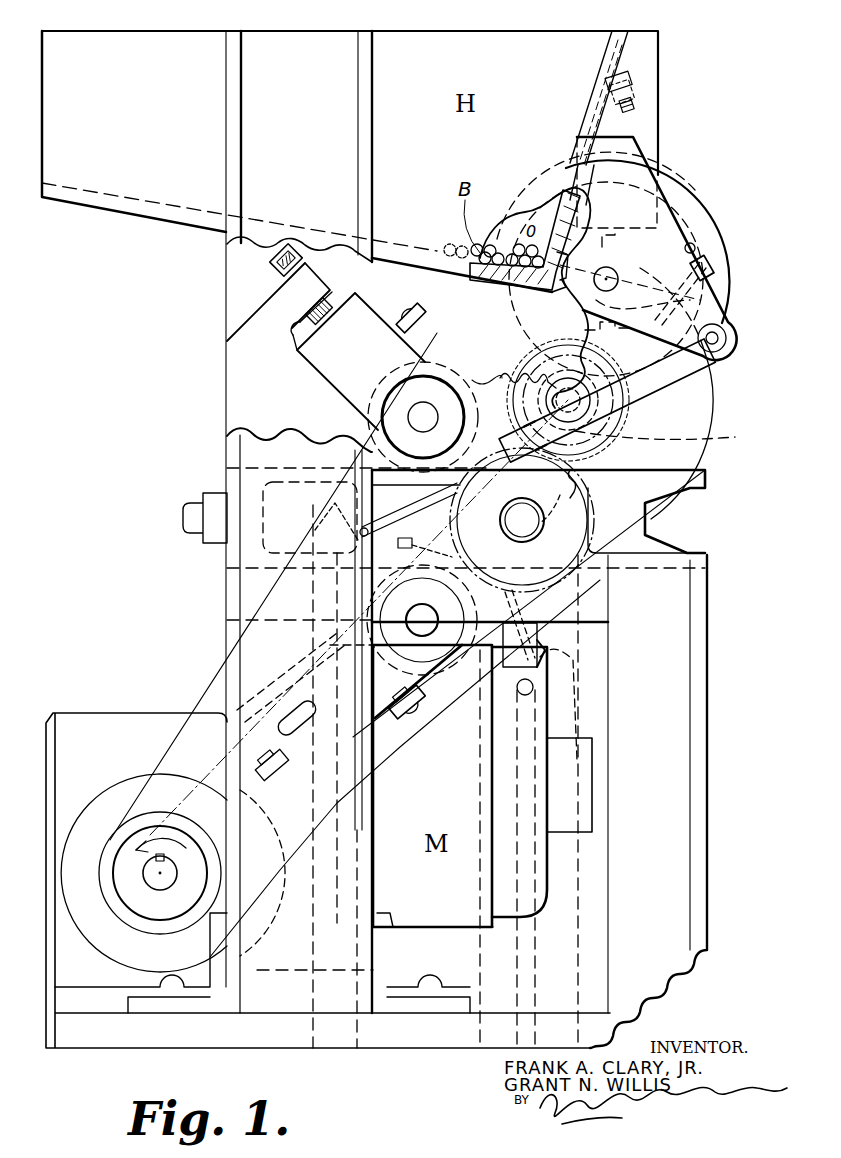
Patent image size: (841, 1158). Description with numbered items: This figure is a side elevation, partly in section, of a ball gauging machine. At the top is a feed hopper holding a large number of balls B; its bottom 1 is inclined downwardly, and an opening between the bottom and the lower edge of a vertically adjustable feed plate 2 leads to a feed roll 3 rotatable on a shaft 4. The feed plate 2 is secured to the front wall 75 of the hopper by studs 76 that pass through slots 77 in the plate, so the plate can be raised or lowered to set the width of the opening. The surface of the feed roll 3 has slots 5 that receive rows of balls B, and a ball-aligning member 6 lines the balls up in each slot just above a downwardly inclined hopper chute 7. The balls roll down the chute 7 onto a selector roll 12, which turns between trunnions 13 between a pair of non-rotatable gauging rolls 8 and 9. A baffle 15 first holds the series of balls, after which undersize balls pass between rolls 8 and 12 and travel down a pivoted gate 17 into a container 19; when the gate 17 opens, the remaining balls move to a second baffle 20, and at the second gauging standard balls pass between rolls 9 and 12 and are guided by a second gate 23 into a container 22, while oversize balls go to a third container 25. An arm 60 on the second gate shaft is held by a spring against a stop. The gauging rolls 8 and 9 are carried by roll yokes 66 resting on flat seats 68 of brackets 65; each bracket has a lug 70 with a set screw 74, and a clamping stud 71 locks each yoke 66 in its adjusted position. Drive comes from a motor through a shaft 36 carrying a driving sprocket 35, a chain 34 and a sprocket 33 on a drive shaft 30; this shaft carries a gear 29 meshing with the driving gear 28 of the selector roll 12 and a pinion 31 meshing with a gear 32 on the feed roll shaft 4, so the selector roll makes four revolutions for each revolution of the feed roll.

The hopper bottom 1 is at (419, 262).
The feed plate 2 is at (566, 204).
The feed roll 3 is at (575, 252).
The feed roll shaft 4 is at (618, 278).
The slots 5 is at (563, 281).
The ball-aligning member 6 is at (706, 296).
The hopper chute 7 is at (636, 368).
The upper gauging roll 8 is at (447, 380).
The lower gauging roll 9 is at (455, 688).
The selector roll 12 is at (560, 582).
The trunnions 13 is at (522, 520).
The baffle 15 is at (508, 376).
The gate 17 is at (335, 492).
The container for undersize balls 19 is at (320, 590).
The second baffle 20 is at (428, 548).
The container for standard balls 22 is at (497, 950).
The second gate 23 is at (565, 632).
The container for oversize balls 25 is at (573, 945).
The driving gear 28 is at (561, 496).
The gear 29 is at (668, 439).
The drive shaft 30 is at (600, 402).
The pinion 31 is at (720, 350).
The gear 32 is at (693, 200).
The sprocket 33 is at (700, 455).
The chain 34 is at (204, 696).
The driving sprocket 35 is at (110, 838).
The shaft 36 is at (154, 876).
The arm 60 is at (272, 268).
The brackets 65 is at (240, 393).
The roll yoke 66 is at (355, 372).
The seats 68 is at (323, 363).
The lug 70 is at (270, 309).
The clamping stud 71 is at (413, 317).
The set screw 74 is at (307, 318).
The front wall 75 is at (608, 55).
The studs 76 is at (634, 104).
The slots 77 is at (636, 90).
The balls B is at (494, 256).